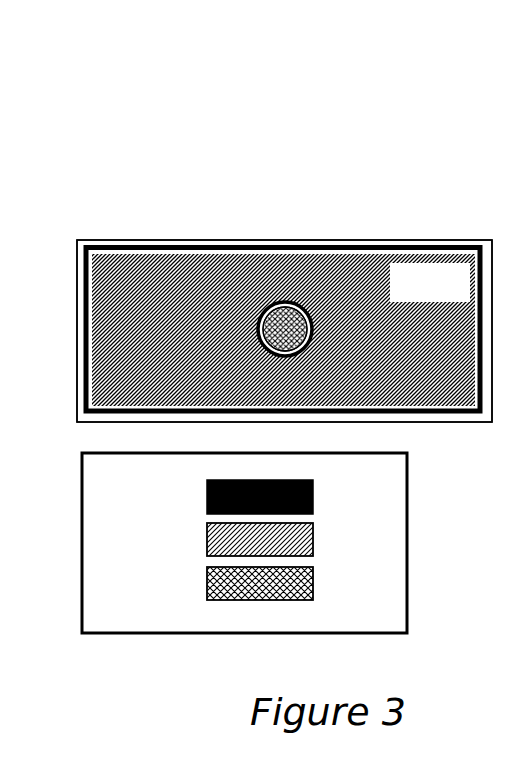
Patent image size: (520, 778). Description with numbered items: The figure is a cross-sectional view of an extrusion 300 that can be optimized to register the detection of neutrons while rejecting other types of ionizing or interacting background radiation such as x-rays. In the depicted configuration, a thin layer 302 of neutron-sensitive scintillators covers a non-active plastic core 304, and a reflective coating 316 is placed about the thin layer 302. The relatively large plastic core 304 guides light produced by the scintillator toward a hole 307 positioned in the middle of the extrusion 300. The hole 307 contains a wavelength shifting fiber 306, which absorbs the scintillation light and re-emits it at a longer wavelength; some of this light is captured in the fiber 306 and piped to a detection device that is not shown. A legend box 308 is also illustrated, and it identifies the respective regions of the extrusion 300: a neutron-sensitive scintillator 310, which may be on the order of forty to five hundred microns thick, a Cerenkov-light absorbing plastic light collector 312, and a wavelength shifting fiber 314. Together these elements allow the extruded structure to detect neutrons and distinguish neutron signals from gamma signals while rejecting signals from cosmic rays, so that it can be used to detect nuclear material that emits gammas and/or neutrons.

The extrusion 300 is at (393, 142).
The thin layer 302 is at (148, 242).
The reflective coating 316 is at (213, 245).
The plastic core 304 is at (448, 293).
The wavelength shifting fiber 306 is at (294, 332).
The hole 307 is at (293, 301).
The legend box 308 is at (352, 490).
The neutron-sensitive scintillator 310 is at (207, 500).
The Cerenkov-light absorbing plastic light collector 312 is at (207, 543).
The wavelength shifting fiber 314 is at (207, 586).